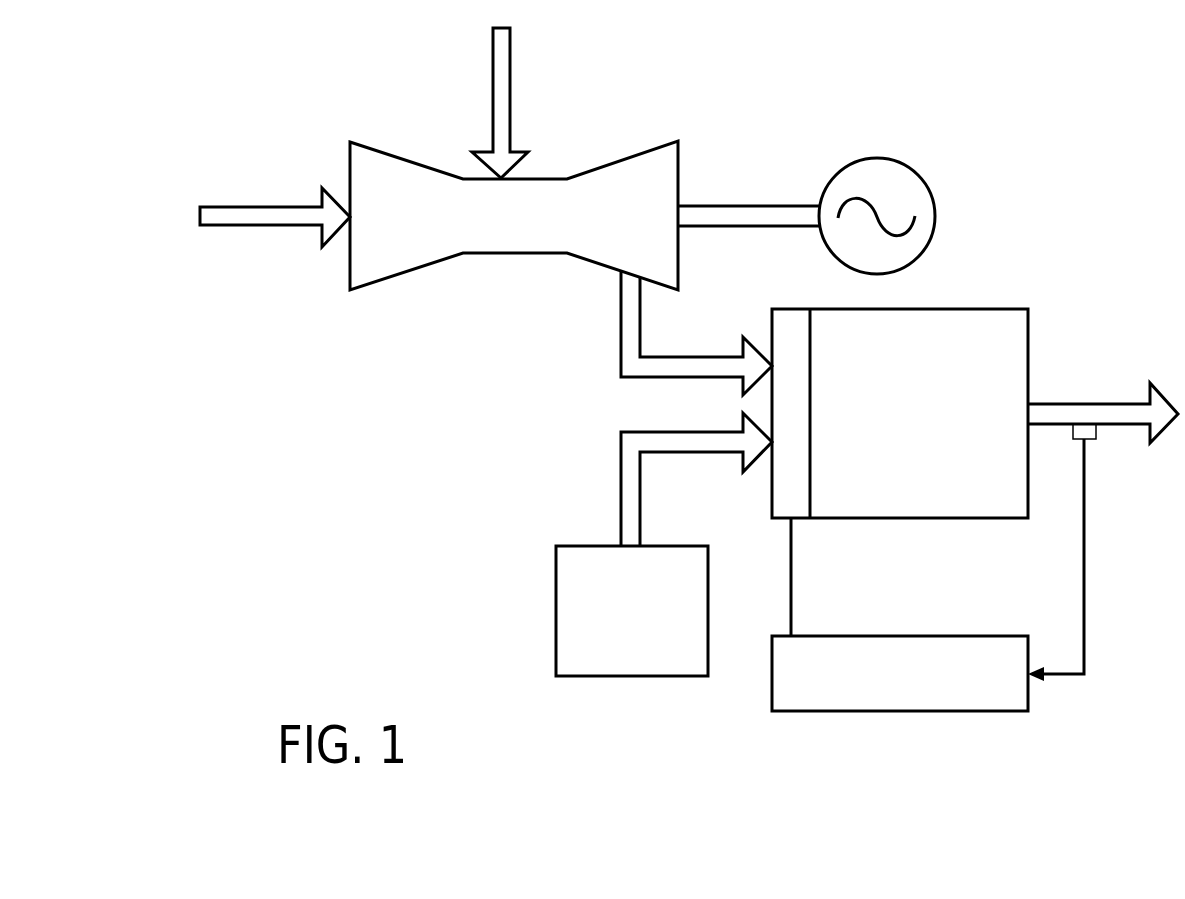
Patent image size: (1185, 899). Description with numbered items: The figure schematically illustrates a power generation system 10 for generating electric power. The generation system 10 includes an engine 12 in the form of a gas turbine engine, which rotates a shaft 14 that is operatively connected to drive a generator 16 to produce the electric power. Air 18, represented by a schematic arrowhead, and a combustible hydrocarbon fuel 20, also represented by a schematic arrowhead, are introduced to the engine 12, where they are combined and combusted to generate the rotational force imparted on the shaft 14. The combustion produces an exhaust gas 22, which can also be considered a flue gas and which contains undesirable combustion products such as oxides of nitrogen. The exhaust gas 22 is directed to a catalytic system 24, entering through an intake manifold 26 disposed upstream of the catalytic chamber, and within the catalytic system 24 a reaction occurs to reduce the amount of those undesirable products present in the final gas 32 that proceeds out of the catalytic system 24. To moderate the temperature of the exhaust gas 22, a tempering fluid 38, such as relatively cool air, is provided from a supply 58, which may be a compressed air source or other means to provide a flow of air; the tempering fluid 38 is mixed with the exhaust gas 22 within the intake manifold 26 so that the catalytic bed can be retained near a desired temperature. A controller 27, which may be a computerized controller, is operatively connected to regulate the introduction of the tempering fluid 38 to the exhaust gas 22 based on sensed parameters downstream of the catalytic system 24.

The power generation system 10 is at (759, 57).
The engine 12 is at (521, 230).
The shaft 14 is at (757, 215).
The generator 16 is at (897, 158).
The air 18 is at (274, 205).
The combustible hydrocarbon fuel 20 is at (497, 88).
The exhaust gas 22 is at (627, 335).
The catalytic system 24 is at (991, 298).
The intake manifold 26 is at (790, 325).
The controller 27 is at (844, 724).
The final gas 32 is at (1105, 403).
The tempering fluid 38 is at (632, 508).
The supply of tempering fluid 58 is at (577, 595).